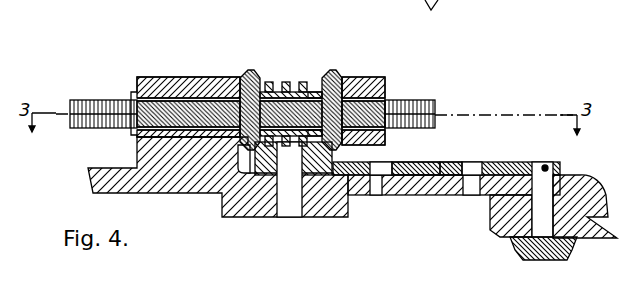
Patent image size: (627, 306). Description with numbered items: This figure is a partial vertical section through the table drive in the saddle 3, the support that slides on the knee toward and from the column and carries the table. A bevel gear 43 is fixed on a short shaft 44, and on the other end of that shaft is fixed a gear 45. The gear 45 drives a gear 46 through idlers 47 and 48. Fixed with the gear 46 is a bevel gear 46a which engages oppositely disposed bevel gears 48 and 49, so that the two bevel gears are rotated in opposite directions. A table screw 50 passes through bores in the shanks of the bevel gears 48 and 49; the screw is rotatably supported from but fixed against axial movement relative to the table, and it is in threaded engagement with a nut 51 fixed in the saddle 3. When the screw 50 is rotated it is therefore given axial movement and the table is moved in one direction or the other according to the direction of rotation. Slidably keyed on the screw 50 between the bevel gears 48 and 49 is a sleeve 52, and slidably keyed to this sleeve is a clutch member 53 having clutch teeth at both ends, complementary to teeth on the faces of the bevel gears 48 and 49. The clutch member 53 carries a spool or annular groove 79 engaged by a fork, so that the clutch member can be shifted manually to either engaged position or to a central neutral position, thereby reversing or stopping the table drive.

The saddle 3 is at (137, 153).
The bevel gear 43 is at (572, 251).
The short shaft 44 is at (530, 209).
The gear 45 is at (556, 165).
The gear 46 is at (336, 162).
The bevel gear 46a is at (247, 160).
The idler 47 is at (418, 165).
The idler / bevel gear 48 is at (248, 70).
The bevel gear 49 is at (331, 71).
The table screw 50 is at (421, 100).
The nut 51 is at (133, 92).
The sleeve 52 is at (310, 88).
The clutch member 53 is at (268, 84).
The spool or annular groove 79 is at (291, 82).